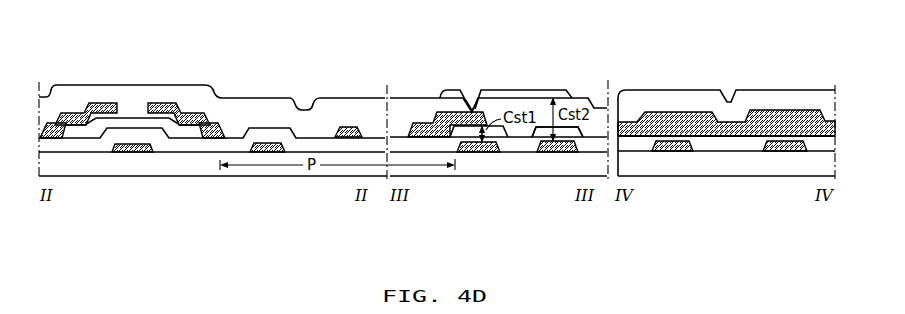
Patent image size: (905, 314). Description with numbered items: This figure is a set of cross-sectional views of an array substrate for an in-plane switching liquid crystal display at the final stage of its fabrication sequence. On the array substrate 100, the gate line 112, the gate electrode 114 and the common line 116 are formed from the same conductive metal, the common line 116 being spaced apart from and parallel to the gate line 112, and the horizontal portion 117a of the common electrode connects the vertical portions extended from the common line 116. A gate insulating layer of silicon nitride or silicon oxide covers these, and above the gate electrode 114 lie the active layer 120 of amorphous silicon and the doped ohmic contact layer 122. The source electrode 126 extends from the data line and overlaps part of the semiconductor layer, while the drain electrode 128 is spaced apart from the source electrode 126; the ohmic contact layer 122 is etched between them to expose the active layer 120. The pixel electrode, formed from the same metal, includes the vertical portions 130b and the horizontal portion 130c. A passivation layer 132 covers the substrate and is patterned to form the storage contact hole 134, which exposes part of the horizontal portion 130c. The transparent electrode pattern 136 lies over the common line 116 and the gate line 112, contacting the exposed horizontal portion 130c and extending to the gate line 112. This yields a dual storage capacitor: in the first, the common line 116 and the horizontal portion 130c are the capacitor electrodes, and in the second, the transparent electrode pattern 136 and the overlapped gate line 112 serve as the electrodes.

The array substrate 100 is at (208, 172).
The gate line 112 is at (555, 152).
The gate electrode 114 is at (130, 153).
The common line 116 is at (477, 152).
The horizontal portion 117a is at (268, 143).
The active layer 120 is at (132, 117).
The ohmic contact layer 122 is at (181, 108).
The source electrode 126 is at (108, 103).
The drain electrode 128 is at (168, 103).
The vertical portions 130b is at (350, 127).
The horizontal portion 130c is at (420, 123).
The passivation layer 132 is at (243, 98).
The storage contact hole 134 is at (473, 104).
The transparent electrode pattern 136 is at (510, 90).